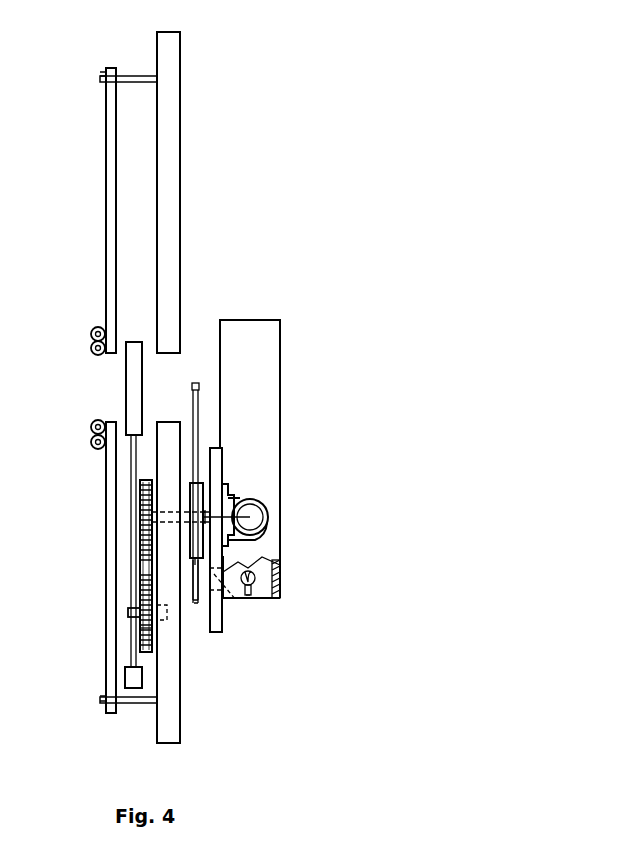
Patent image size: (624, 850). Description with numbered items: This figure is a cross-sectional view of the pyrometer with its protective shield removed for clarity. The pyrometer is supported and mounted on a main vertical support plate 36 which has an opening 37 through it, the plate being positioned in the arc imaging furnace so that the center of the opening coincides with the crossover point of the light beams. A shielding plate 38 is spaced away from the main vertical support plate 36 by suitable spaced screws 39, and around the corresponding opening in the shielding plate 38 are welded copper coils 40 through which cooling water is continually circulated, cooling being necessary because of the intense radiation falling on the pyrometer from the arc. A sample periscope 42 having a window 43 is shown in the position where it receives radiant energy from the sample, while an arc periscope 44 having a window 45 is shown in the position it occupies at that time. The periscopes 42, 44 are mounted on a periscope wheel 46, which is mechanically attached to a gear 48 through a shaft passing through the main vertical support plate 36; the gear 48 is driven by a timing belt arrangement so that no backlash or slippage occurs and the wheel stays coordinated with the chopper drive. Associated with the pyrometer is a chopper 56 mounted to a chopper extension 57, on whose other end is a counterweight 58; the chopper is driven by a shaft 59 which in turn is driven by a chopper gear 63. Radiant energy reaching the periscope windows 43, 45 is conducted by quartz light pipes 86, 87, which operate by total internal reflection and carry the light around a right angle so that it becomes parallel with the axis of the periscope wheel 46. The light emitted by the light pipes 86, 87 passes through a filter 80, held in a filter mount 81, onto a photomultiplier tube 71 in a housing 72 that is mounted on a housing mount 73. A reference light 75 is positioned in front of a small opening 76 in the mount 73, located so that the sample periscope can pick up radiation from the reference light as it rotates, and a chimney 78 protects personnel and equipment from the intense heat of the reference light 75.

The main vertical support plate 36 is at (165, 150).
The opening 37 is at (165, 375).
The shielding plate 38 is at (110, 160).
The screws 39 is at (142, 76).
The copper coils 40 is at (91, 333).
The sample periscope 42 is at (200, 410).
The window 43 is at (198, 388).
The arc periscope 44 is at (190, 565).
The window 45 is at (192, 600).
The periscope wheel 46 is at (192, 481).
The gear 48 is at (140, 509).
The chopper 56 is at (128, 380).
The chopper extension 57 is at (133, 468).
The counterweight 58 is at (128, 678).
The shaft 59 is at (128, 612).
The chopper gear 63 is at (147, 628).
The photomultiplier tube 71 is at (255, 512).
The housing 72 is at (262, 520).
The housing mount 73 is at (215, 624).
The reference light 75 is at (276, 580).
The opening 76 is at (246, 604).
The chimney 78 is at (250, 415).
The filter 80 is at (234, 487).
The filter mount 81 is at (222, 476).
The quartz light pipe 86 is at (236, 516).
The quartz light pipe 87 is at (246, 537).